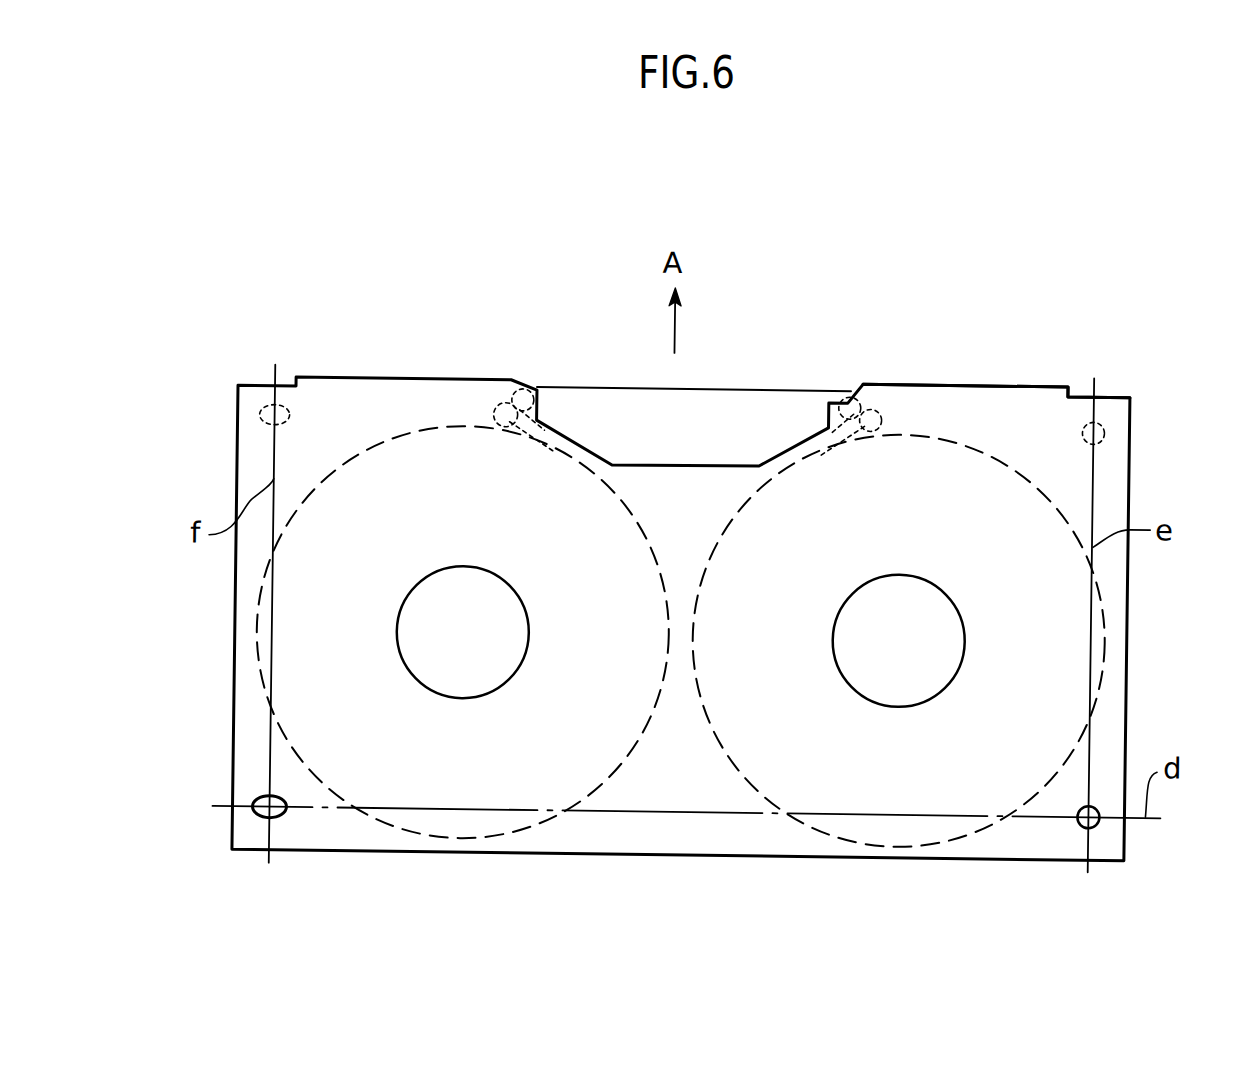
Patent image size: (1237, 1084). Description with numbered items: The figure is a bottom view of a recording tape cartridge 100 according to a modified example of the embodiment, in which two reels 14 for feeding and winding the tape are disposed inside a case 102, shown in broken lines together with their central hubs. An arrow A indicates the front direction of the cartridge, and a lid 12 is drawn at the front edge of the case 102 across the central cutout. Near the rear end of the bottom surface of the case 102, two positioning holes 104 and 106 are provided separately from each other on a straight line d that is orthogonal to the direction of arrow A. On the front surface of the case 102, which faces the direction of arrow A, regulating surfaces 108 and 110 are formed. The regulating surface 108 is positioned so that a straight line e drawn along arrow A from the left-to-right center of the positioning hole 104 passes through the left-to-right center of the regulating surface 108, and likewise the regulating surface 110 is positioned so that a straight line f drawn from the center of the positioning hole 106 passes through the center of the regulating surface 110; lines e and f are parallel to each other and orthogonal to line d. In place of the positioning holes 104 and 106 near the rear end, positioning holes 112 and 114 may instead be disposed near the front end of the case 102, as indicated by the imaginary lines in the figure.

The recording tape cartridge 100 is at (939, 326).
The case 102 is at (960, 393).
The positioning hole 104 is at (1100, 818).
The positioning hole 106 is at (283, 825).
The regulating surface 108 is at (1104, 391).
The regulating surface 110 is at (258, 388).
The positioning hole 112 is at (1102, 414).
The positioning hole 114 is at (256, 422).
The lid 12 is at (746, 390).
The reel 14 is at (525, 825).